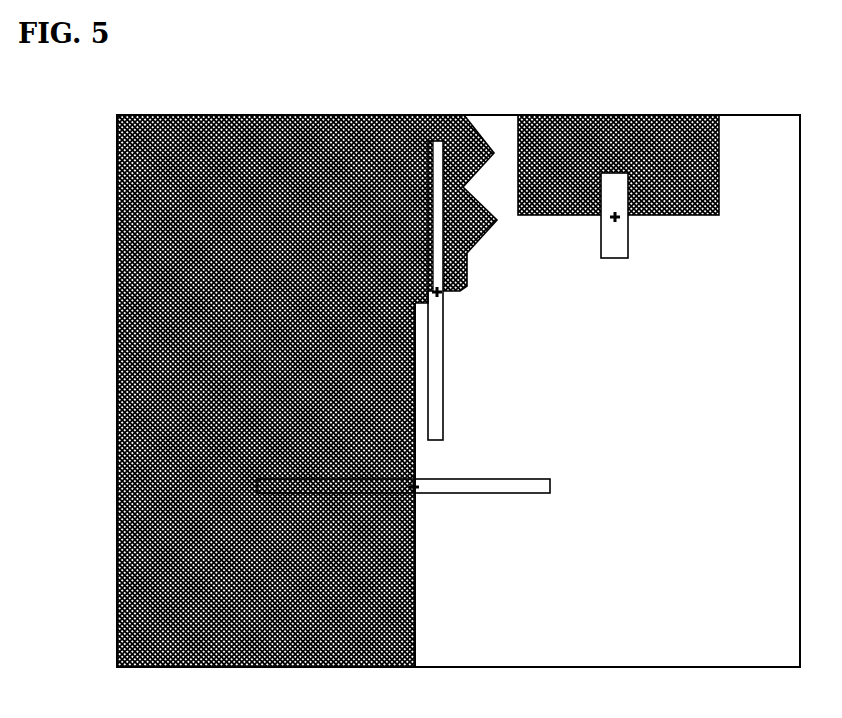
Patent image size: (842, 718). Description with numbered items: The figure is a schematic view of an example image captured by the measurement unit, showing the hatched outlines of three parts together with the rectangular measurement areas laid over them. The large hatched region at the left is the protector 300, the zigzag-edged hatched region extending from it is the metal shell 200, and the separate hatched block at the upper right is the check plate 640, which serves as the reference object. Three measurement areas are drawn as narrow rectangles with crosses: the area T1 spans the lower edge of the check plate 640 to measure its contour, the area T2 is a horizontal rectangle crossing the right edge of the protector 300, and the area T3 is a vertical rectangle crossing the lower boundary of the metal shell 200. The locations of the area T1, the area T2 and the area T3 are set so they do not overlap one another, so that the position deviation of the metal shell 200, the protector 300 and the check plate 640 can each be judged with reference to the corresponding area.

The metal shell 200 is at (482, 243).
The protector 300 is at (415, 580).
The check plate 640 is at (719, 168).
The area for measuring the contour of the check plate T1 is at (615, 258).
The area for measuring the contour of the protector T2 is at (512, 479).
The area for measuring the contour of the metal shell T3 is at (443, 367).